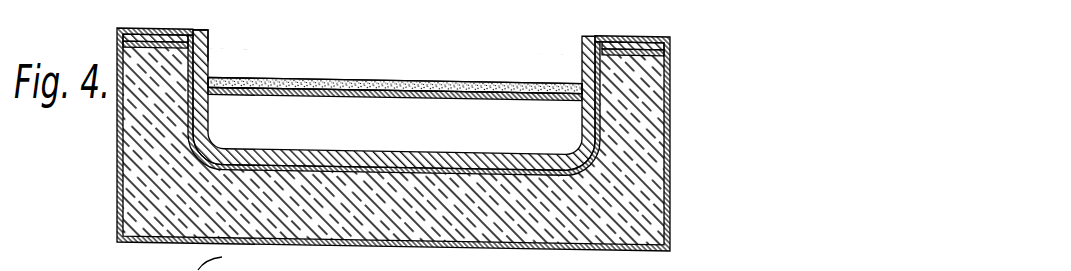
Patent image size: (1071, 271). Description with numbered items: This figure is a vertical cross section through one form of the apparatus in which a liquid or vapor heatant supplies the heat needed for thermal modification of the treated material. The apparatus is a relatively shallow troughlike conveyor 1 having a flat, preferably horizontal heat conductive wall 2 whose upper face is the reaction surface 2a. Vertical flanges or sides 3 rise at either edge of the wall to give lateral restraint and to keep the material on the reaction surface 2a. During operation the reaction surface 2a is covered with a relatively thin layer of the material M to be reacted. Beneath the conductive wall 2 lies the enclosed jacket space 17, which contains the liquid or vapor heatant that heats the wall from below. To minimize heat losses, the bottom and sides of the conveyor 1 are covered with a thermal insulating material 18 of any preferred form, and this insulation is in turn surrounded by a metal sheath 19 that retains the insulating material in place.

The conveyor 1 is at (219, 34).
The heat conductive wall 2 is at (424, 95).
The reaction surface 2a is at (372, 88).
The sides 3 is at (208, 63).
The material M is at (322, 80).
The jacket space 17 is at (550, 124).
The thermal insulating material 18 is at (633, 156).
The metal sheath 19 is at (670, 208).